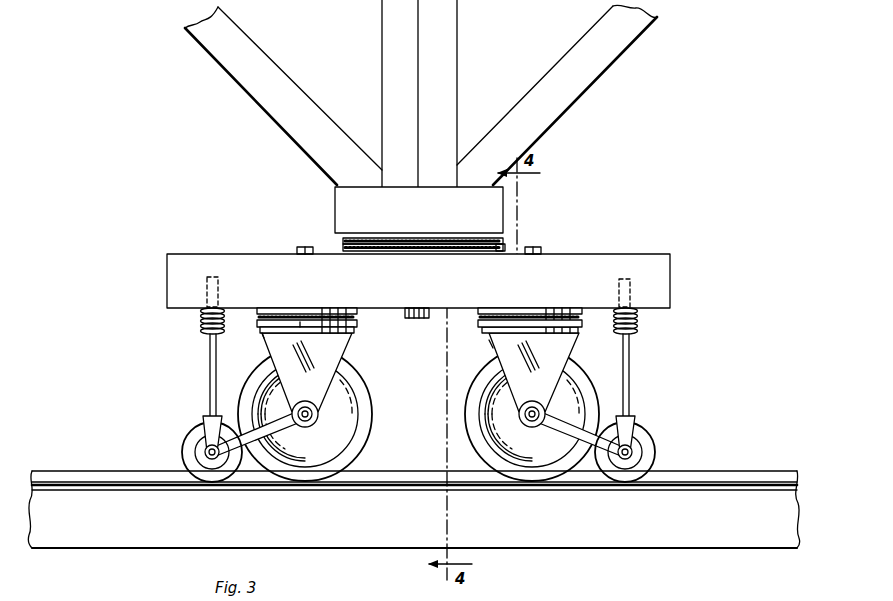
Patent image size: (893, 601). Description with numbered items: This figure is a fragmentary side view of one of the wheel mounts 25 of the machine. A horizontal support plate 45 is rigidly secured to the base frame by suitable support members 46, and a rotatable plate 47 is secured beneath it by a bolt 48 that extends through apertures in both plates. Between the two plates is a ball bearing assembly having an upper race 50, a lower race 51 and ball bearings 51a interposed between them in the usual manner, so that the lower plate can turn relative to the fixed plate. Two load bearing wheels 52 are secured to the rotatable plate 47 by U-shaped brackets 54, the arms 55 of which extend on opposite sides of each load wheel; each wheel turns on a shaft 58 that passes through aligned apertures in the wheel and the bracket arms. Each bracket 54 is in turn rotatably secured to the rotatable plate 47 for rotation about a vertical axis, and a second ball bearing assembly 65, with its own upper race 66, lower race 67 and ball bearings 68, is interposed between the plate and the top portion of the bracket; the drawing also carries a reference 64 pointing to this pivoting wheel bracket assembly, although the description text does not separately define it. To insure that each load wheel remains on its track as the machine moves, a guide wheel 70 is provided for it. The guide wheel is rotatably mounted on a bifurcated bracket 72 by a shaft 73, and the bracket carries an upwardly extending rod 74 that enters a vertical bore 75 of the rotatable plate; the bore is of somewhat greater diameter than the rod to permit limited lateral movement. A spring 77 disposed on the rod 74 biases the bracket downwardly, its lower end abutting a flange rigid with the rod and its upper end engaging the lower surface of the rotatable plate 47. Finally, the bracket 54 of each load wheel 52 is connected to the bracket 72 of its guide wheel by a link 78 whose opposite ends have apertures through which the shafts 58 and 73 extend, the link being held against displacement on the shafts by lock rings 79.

The wheel mount 25 is at (205, 234).
The horizontal support plate 45 is at (334, 208).
The support members 46 is at (459, 63).
The rotatable plate 47 is at (672, 262).
The bolt 48 is at (410, 318).
The upper race 50 is at (343, 241).
The lower race 51 is at (495, 250).
The ball bearings 51a is at (343, 248).
The load bearing wheel 52 is at (467, 405).
The U-shaped bracket 54 is at (348, 346).
The bracket arm 55 is at (563, 346).
The shaft 58 is at (319, 417).
The caster assembly 64 is at (489, 350).
The ball bearing assembly 65 is at (258, 326).
The upper race 66 is at (480, 312).
The lower race 67 is at (492, 327).
The ball bearings 68 is at (495, 318).
The guide wheel 70 is at (183, 454).
The bifurcated bracket 72 is at (203, 421).
The shaft 73 is at (190, 446).
The rod 74 is at (209, 372).
The bore 75 is at (623, 286).
The spring 77 is at (201, 318).
The link 78 is at (203, 333).
The lock rings 79 is at (305, 406).